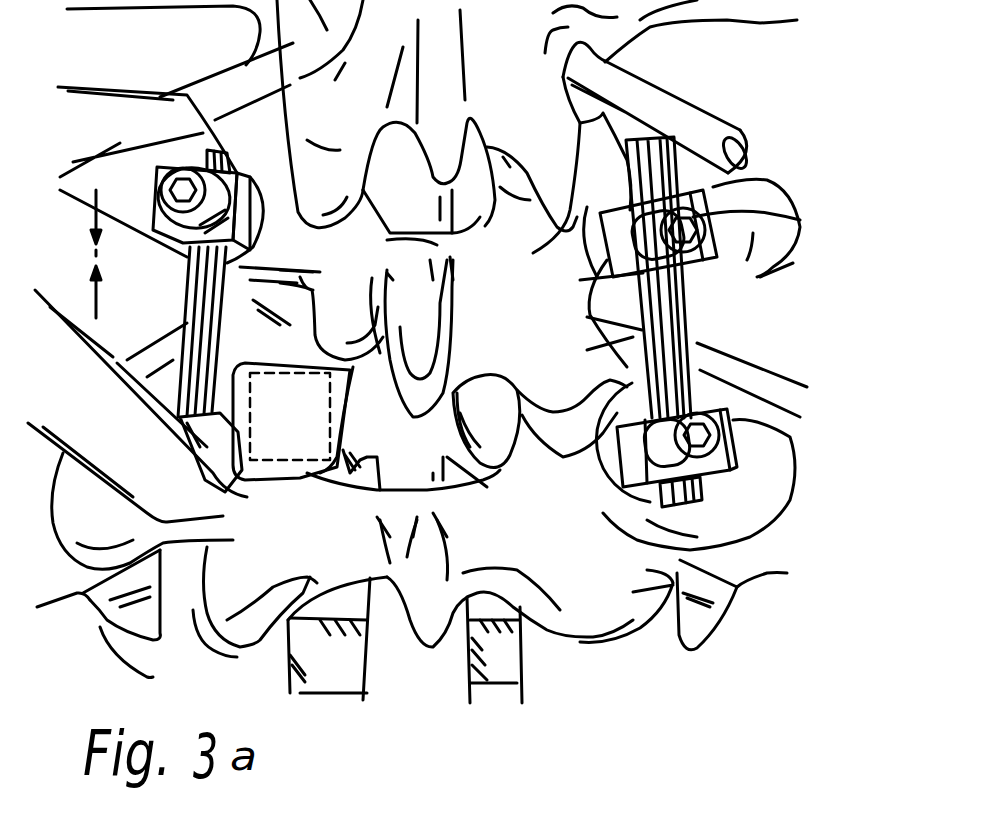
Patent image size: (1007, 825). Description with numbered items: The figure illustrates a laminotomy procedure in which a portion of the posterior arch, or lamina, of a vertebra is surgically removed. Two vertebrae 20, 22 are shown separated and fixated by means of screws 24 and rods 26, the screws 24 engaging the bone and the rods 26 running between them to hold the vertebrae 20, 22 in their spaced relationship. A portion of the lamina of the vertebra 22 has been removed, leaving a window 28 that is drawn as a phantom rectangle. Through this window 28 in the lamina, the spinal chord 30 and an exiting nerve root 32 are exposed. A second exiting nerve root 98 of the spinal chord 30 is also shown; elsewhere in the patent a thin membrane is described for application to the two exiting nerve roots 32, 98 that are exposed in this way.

The vertebra 20 is at (592, 352).
The vertebra 22 is at (647, 553).
The screws 24 is at (173, 183).
The rods 26 is at (183, 322).
The window 28 is at (277, 417).
The spinal chord 30 is at (420, 474).
The exiting nerve root 32 is at (358, 491).
The exiting nerve root 98 is at (482, 453).